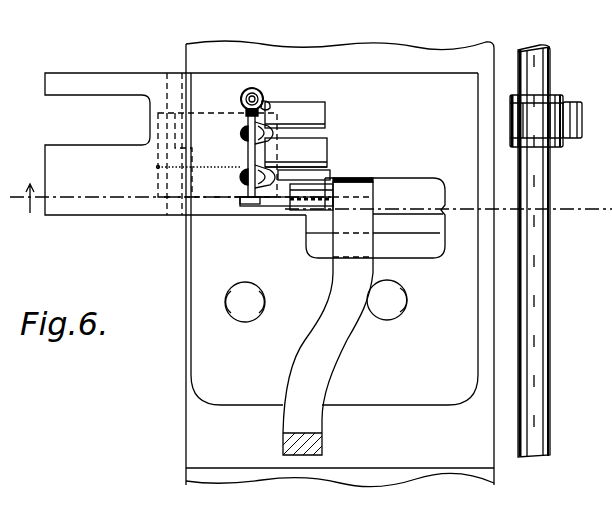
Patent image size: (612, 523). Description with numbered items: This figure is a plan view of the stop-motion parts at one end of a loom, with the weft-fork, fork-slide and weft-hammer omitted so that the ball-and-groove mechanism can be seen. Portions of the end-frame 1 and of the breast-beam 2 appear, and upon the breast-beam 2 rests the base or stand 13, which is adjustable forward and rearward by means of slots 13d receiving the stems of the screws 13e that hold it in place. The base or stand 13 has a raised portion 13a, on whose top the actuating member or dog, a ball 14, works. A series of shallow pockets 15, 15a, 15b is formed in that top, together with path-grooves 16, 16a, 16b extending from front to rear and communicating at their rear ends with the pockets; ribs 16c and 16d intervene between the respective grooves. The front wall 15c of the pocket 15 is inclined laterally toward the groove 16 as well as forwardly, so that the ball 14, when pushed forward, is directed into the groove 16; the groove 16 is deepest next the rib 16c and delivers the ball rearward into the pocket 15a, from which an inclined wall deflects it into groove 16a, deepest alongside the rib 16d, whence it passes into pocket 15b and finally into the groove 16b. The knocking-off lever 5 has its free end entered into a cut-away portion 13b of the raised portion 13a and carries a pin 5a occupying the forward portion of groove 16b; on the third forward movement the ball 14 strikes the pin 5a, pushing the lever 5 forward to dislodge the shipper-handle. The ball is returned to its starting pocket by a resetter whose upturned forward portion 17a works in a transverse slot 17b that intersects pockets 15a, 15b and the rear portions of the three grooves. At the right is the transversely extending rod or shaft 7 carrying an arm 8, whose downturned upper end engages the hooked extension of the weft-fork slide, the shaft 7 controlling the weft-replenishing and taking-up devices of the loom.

The end-frame 1 is at (188, 482).
The breast-beam 2 is at (192, 425).
The knocking-off lever 5 is at (302, 375).
The pin or projection 5a is at (312, 188).
The rod or shaft 7 is at (552, 371).
The arm 8 is at (582, 132).
The base or stand 13 is at (200, 247).
The raised portion 13a is at (440, 78).
The cut-away portion 13b is at (412, 183).
The slots 13d is at (444, 304).
The screws 13e is at (392, 308).
The ball 14 is at (255, 88).
The pocket 15 is at (243, 90).
The pocket 15a is at (243, 132).
The pocket 15b is at (242, 181).
The front wall 15c is at (267, 102).
The path-groove 16 is at (310, 112).
The path-groove 16a is at (316, 158).
The path-groove 16b is at (283, 206).
The rib 16c is at (312, 150).
The rib 16d is at (300, 174).
The forward portion 17a is at (253, 205).
The slot 17b is at (250, 157).